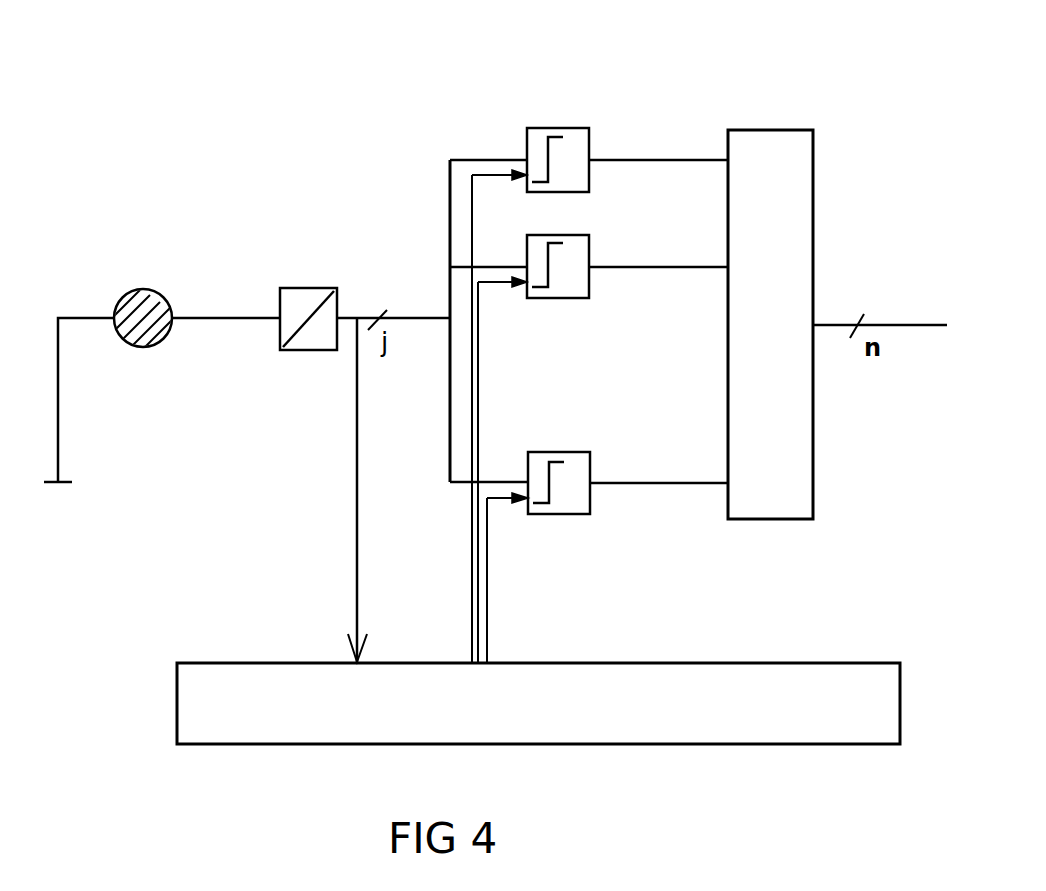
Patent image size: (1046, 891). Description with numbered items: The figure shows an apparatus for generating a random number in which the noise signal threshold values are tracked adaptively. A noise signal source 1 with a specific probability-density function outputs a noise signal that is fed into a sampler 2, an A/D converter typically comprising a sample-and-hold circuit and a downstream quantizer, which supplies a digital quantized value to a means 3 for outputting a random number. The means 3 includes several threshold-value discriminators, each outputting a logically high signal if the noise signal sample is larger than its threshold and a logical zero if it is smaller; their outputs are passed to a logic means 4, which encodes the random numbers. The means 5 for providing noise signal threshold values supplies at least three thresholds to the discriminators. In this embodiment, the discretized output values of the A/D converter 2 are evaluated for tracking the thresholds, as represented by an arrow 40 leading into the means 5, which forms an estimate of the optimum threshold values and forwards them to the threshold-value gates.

The noise signal source 1 is at (148, 290).
The sampler 2 is at (307, 290).
The means for outputting a random number 3 is at (555, 98).
The logic means 4 is at (761, 132).
The means for providing noise signal threshold values 5 is at (872, 670).
The arrow 40 is at (358, 580).